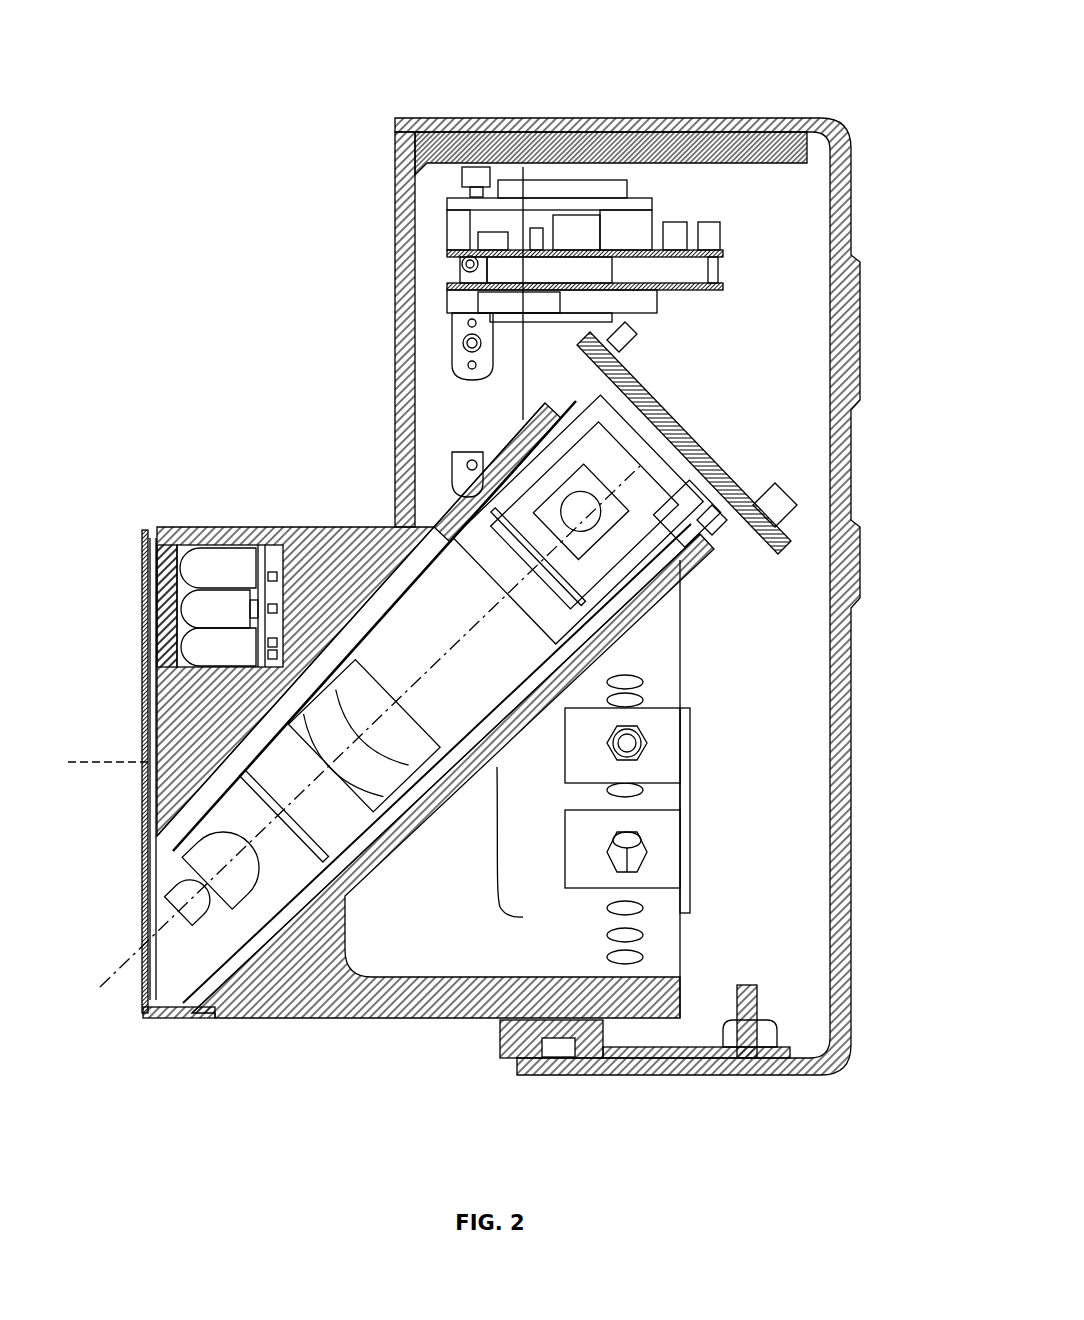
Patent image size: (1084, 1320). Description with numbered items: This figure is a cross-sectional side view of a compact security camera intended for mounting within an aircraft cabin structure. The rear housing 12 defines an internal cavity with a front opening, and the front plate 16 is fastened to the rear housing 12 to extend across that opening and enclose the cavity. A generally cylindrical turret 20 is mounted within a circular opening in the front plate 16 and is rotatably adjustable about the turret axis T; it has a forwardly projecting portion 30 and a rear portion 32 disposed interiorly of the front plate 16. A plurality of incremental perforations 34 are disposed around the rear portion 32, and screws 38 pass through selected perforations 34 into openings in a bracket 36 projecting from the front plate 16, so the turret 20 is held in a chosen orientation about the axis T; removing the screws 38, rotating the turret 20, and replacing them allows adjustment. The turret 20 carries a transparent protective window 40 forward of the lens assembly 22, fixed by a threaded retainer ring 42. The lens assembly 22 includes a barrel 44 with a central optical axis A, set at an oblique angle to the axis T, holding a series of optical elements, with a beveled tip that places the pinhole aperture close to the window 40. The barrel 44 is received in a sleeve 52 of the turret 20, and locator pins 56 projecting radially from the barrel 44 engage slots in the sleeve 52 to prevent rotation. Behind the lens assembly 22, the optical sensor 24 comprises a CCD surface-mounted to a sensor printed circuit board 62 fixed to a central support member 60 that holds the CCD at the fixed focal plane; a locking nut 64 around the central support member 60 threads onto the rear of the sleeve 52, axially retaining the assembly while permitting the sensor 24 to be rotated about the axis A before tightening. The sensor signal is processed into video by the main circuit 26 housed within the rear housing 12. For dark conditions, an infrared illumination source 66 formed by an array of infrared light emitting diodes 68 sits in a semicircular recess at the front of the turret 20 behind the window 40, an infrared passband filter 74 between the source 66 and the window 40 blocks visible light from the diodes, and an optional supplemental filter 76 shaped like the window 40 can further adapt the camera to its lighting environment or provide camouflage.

The rear housing 12 is at (862, 332).
The front plate 16 is at (396, 268).
The turret 20 is at (268, 1040).
The lens assembly 22 is at (366, 598).
The optical sensor 24 is at (752, 480).
The main circuit 26 is at (742, 244).
The forwardly projecting portion 30 is at (304, 1018).
The rear portion 32 is at (646, 990).
The incremental perforations 34 is at (775, 975).
The bracket 36 is at (690, 838).
The screws 38 is at (635, 828).
The protective window 40 is at (150, 600).
The threaded retainer ring 42 is at (150, 548).
The barrel 44 is at (397, 808).
The sleeve 52 is at (434, 508).
The locator pins 56 is at (540, 425).
The central support member 60 is at (655, 575).
The sensor printed circuit board 62 is at (462, 342).
The locking nut 64 is at (718, 553).
The infrared illumination source 66 is at (259, 518).
The infrared light emitting diodes 68 is at (213, 582).
The infrared passband filter 74 is at (166, 664).
The supplemental filter 76 is at (150, 627).
The optical axis A is at (361, 743).
The turret axis T is at (97, 764).